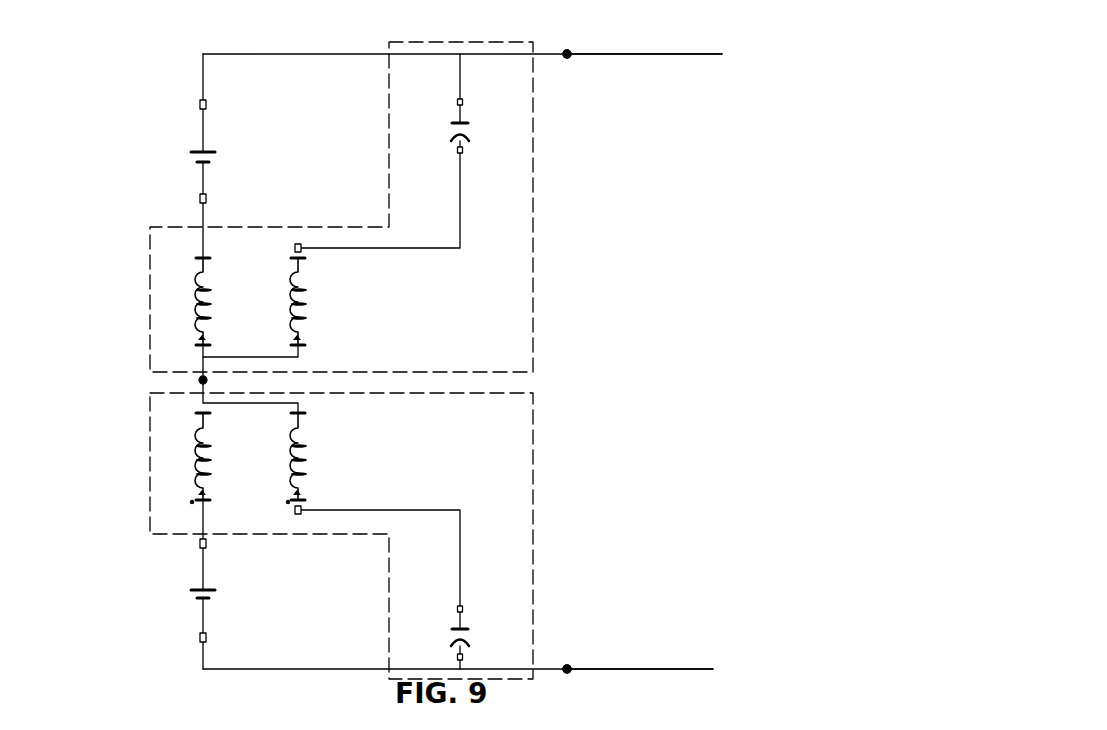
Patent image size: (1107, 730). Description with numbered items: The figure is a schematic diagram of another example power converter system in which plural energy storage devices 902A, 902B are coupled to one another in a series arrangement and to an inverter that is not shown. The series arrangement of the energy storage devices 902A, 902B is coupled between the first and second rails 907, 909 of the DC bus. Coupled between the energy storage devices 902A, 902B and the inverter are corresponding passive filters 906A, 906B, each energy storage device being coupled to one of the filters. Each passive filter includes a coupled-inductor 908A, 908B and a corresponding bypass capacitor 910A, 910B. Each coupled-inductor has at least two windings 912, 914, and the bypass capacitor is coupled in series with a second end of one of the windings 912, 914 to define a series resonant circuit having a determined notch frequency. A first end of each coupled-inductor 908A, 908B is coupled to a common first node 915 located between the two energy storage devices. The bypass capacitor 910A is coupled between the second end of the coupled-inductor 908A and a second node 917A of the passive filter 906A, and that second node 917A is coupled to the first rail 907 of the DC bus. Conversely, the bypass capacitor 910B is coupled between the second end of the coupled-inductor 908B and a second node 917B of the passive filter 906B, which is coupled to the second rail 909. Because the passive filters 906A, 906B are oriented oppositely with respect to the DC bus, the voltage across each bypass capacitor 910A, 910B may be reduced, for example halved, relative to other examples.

The energy storage device 902A is at (193, 155).
The energy storage device 902B is at (195, 593).
The passive filter 906A is at (533, 207).
The passive filter 906B is at (533, 503).
The first rail 907 is at (673, 54).
The coupled-inductor 908A is at (177, 300).
The coupled-inductor 908B is at (160, 463).
The second rail 909 is at (698, 669).
The bypass capacitor 910A is at (450, 129).
The bypass capacitor 910B is at (450, 638).
The winding 912 is at (185, 280).
The winding 914 is at (300, 318).
The common first node 915 is at (200, 380).
The second node 917A is at (567, 54).
The second node 917B is at (567, 669).